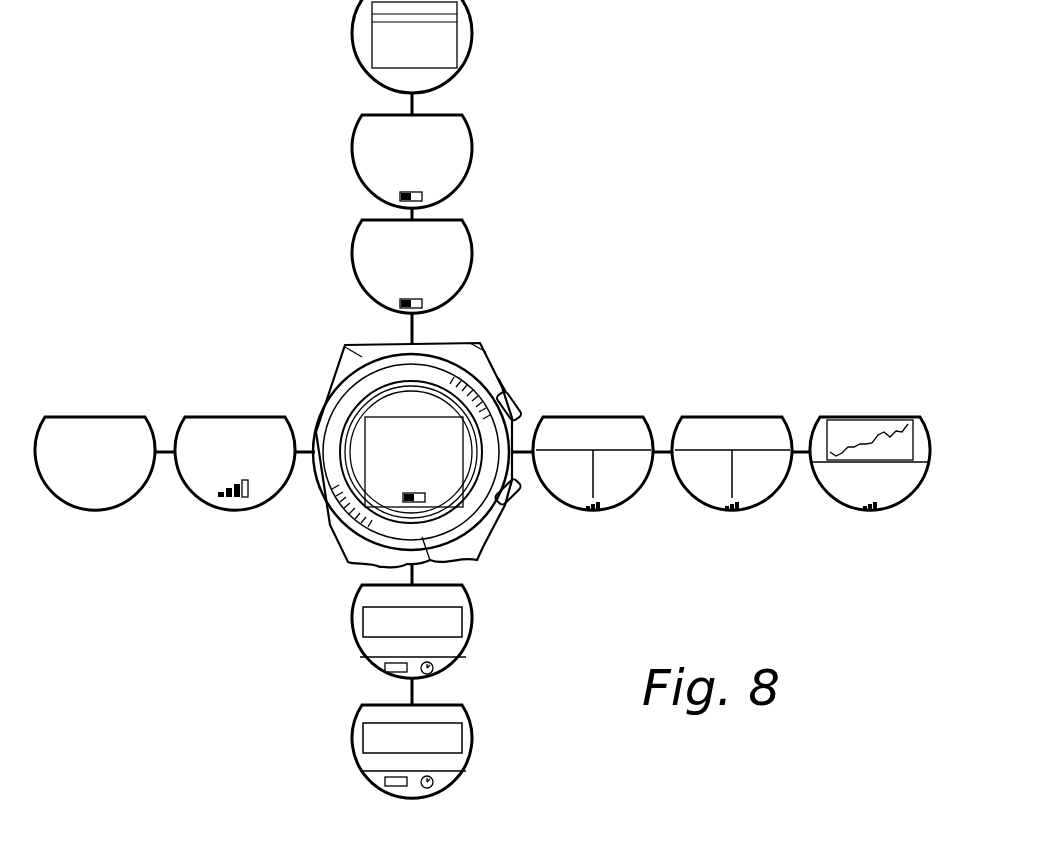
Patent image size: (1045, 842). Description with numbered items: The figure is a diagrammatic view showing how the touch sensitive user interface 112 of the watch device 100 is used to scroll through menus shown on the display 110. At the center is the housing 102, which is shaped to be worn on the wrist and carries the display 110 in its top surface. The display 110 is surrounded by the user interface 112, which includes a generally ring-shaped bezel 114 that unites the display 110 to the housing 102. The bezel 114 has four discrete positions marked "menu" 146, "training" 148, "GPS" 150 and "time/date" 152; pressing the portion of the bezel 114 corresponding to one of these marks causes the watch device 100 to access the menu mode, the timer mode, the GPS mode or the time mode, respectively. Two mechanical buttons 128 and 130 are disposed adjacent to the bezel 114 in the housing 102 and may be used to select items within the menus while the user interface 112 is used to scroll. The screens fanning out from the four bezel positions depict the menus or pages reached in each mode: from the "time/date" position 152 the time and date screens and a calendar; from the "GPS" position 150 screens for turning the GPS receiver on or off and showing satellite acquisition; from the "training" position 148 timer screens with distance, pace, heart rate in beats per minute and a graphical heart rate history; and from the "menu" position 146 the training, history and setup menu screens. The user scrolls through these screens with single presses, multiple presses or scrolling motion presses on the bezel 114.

The watch device 100 is at (567, 242).
The housing 102 is at (457, 350).
The display 110 is at (368, 473).
The touch sensitive user interface 112 is at (322, 405).
The bezel 114 is at (505, 393).
The mechanical button 128 is at (510, 398).
The mechanical button 130 is at (515, 500).
The menu position 146 is at (445, 562).
The training position 148 is at (533, 420).
The GPS position 150 is at (330, 470).
The time/date position 152 is at (392, 360).